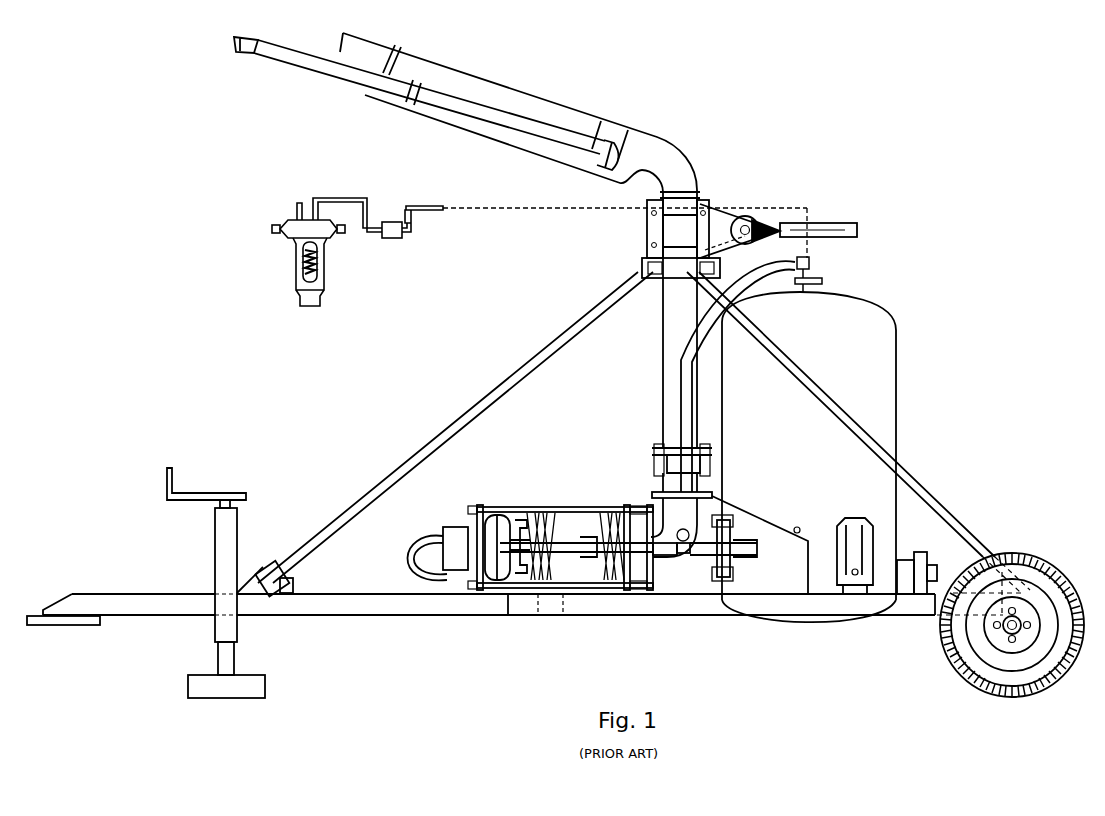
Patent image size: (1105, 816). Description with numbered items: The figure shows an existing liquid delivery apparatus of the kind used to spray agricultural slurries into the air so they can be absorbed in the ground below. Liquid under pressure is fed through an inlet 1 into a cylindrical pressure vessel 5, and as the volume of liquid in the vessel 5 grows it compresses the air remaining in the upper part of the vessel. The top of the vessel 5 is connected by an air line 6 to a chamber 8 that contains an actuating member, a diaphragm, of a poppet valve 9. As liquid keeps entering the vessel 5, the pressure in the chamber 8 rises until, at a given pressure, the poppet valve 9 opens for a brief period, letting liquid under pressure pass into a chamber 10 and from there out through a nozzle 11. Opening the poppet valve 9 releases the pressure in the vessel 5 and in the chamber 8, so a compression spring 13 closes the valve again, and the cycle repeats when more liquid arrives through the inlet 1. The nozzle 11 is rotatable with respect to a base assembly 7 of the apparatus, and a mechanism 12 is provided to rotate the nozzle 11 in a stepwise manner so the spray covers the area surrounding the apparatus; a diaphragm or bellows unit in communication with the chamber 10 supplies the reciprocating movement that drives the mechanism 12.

The inlet 1 is at (907, 600).
The cylindrical pressure vessel 5 is at (866, 310).
The air line 6 is at (795, 238).
The base assembly 7 is at (390, 607).
The chamber 8 is at (497, 594).
The poppet valve 9 is at (706, 565).
The chamber 10 is at (675, 560).
The nozzle 11 is at (477, 91).
The mechanism for rotating the nozzle 12 is at (712, 226).
The compression spring 13 is at (540, 507).